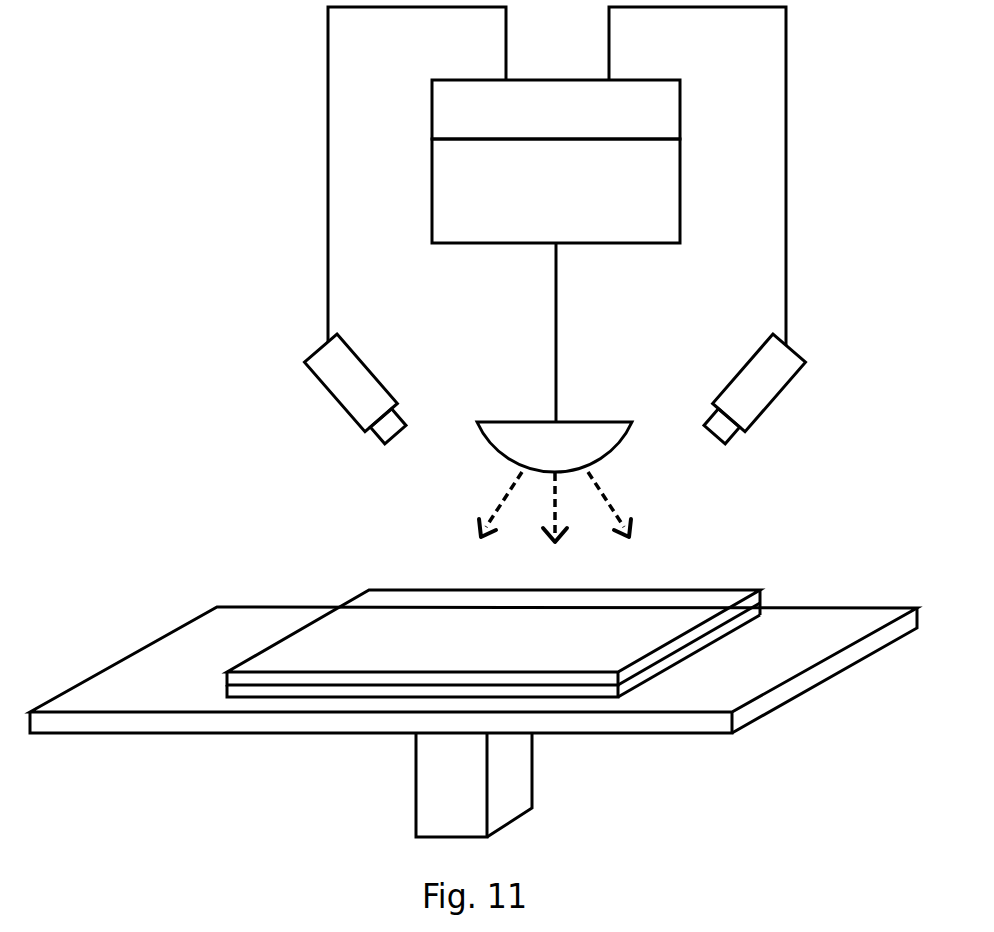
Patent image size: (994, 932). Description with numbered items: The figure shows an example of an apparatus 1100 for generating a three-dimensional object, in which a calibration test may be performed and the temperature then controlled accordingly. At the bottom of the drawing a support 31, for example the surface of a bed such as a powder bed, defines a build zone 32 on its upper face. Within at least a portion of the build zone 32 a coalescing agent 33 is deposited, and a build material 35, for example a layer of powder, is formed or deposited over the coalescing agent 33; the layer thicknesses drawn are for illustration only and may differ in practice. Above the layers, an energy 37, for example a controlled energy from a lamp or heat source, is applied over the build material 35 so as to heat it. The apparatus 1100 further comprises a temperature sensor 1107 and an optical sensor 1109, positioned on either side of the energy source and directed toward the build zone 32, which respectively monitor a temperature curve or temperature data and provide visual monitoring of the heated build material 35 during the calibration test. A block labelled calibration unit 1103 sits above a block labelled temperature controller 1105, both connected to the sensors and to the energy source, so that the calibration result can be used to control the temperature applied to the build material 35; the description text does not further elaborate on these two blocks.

The apparatus 1100 is at (267, 192).
The calibration unit 1103 is at (681, 113).
The temperature controller 1105 is at (431, 185).
The temperature sensor 1107 is at (336, 403).
The optical sensor 1109 is at (776, 400).
The energy 37 is at (633, 450).
The build material 35 is at (383, 618).
The coalescing agent 33 is at (742, 618).
The build zone 32 is at (180, 658).
The support 31 is at (473, 705).